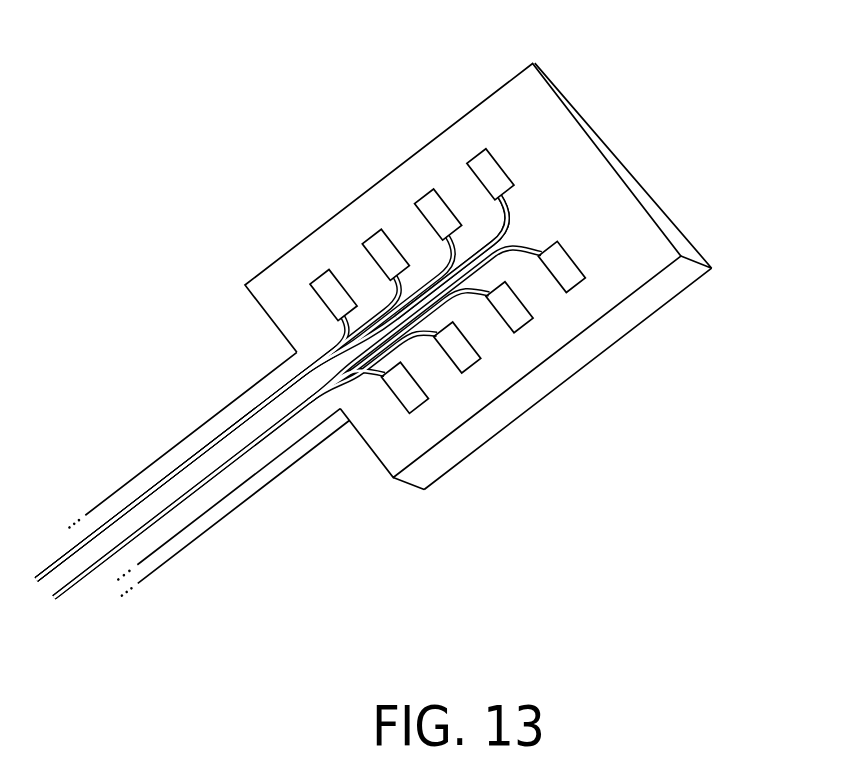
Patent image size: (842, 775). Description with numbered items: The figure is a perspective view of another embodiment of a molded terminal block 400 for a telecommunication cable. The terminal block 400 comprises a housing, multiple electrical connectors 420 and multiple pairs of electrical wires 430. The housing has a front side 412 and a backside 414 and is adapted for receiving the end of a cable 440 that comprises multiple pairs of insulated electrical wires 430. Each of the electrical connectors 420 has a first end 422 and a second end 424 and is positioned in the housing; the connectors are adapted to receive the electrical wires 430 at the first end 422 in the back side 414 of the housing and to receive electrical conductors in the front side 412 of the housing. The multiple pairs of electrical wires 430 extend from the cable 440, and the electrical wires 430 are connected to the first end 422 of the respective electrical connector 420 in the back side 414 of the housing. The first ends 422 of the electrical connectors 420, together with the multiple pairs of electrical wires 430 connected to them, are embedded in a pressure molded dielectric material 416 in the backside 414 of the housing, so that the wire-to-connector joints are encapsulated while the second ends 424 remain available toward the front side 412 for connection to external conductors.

The terminal block 400 is at (392, 309).
The front side 412 is at (628, 233).
The backside 414 is at (622, 146).
The pressure molded dielectric material 416 is at (658, 295).
The electrical connectors 420 is at (589, 300).
The first end 422 is at (480, 158).
The second end 424 is at (517, 190).
The electrical wires 430 is at (346, 391).
The cable 440 is at (170, 543).